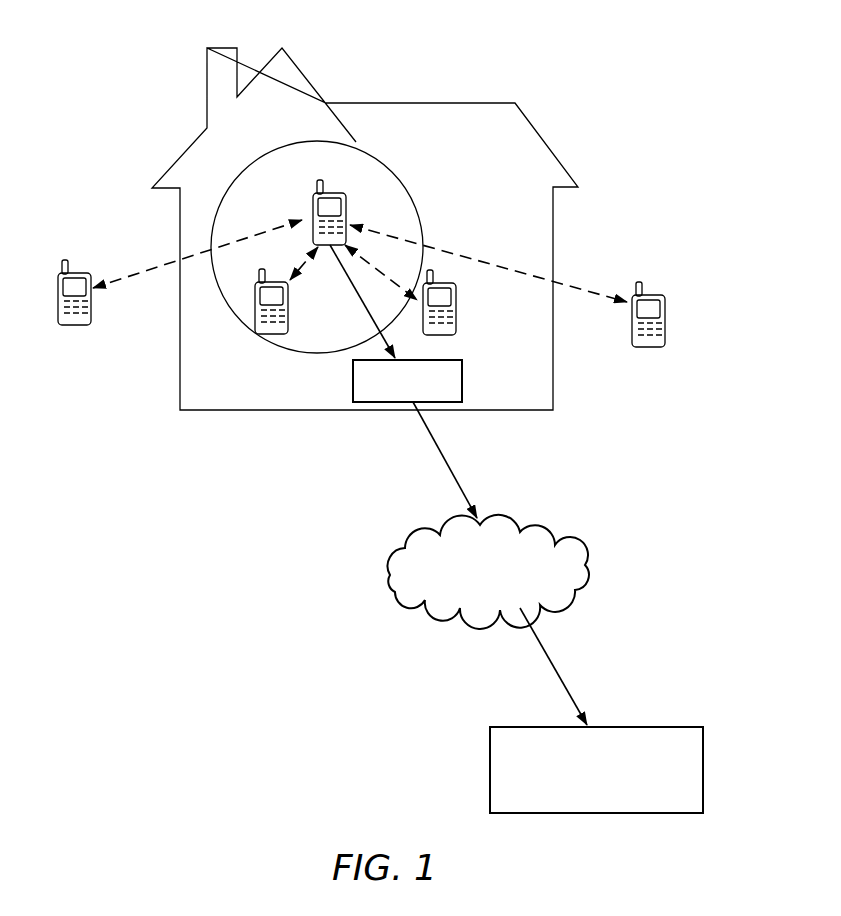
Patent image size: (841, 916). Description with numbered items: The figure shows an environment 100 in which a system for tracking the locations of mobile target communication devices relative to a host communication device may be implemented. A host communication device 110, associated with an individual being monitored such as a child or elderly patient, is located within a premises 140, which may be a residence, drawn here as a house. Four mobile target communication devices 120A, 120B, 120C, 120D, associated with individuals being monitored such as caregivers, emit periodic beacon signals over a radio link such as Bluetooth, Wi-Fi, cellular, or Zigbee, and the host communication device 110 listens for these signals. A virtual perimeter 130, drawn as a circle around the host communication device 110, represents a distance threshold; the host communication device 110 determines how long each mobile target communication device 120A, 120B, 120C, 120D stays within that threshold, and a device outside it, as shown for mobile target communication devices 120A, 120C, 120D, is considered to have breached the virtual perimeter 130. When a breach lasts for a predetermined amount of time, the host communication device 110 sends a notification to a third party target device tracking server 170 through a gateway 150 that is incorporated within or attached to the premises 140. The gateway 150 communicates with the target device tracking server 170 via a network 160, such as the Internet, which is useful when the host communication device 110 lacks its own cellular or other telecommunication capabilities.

The target device tracking system 100 is at (362, 72).
The host communication device 110 is at (333, 196).
The mobile target communication device 120A is at (73, 326).
The mobile target communication device 120B is at (272, 334).
The mobile target communication device 120C is at (458, 309).
The mobile target communication device 120D is at (648, 349).
The virtual perimeter 130 is at (401, 181).
The premises 140 is at (541, 136).
The gateway 150 is at (463, 380).
The network 160 is at (521, 522).
The target device tracking server 170 is at (640, 726).